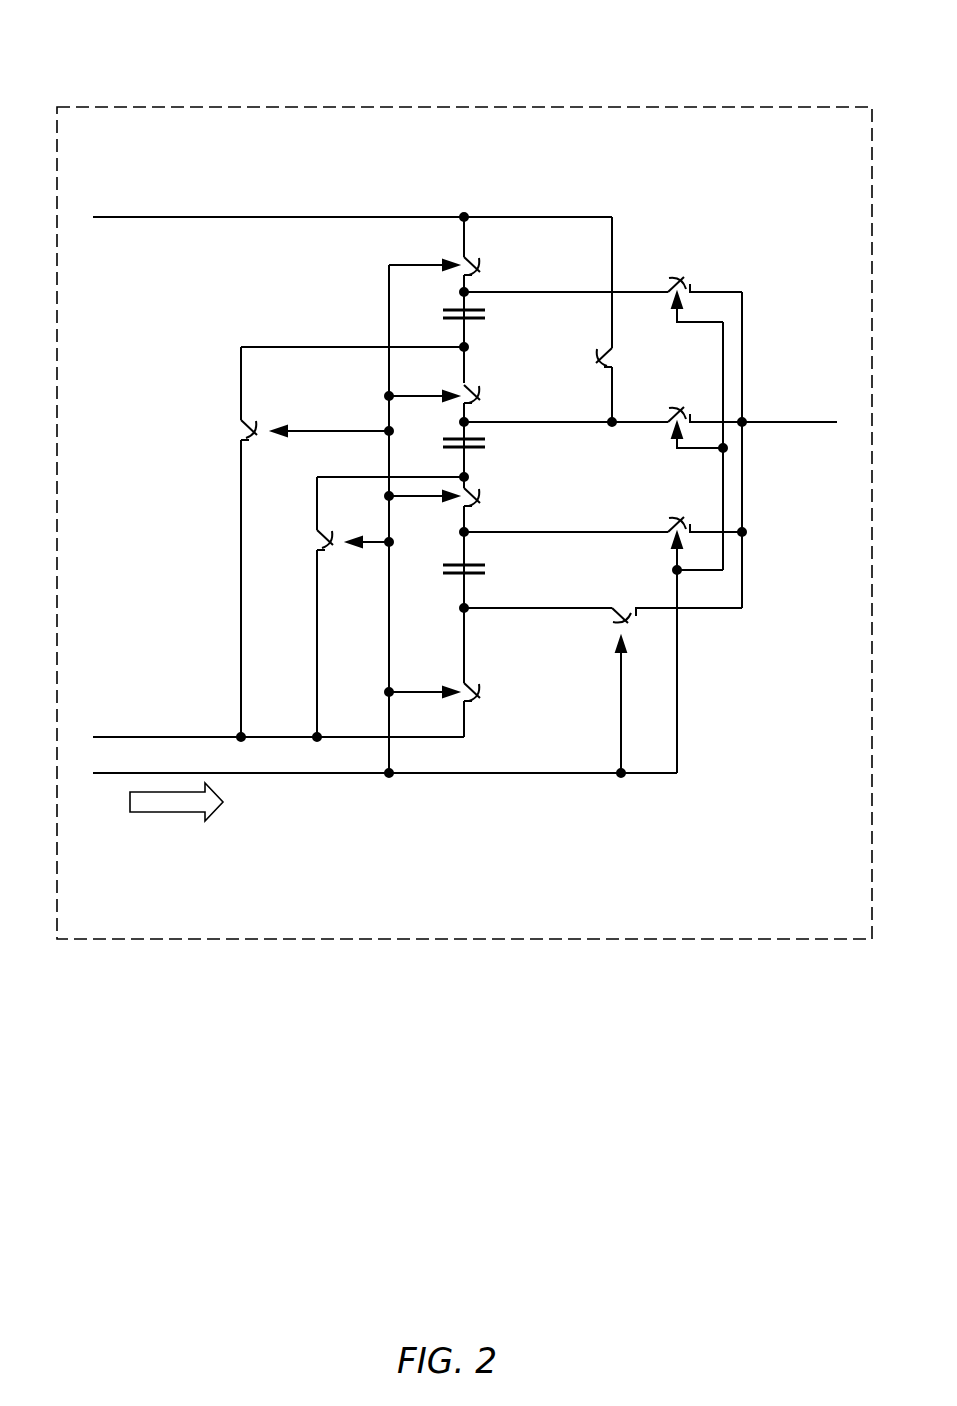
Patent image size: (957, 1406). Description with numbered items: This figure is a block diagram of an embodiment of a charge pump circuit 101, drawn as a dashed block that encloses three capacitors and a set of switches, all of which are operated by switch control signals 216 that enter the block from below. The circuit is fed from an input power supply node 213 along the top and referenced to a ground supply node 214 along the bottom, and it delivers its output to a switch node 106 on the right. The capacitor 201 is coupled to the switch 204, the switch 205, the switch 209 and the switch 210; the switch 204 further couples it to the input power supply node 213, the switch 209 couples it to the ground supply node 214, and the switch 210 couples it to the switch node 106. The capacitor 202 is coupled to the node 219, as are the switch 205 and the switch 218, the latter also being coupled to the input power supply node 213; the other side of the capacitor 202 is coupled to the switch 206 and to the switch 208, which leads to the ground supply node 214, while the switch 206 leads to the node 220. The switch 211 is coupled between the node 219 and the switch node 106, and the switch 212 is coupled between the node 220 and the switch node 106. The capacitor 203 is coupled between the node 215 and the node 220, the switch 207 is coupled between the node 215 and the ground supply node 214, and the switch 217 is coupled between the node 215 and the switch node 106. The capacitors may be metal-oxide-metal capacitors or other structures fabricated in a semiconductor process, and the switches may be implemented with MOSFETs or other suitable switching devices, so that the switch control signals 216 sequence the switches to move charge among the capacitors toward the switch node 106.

The charge pump circuit 101 is at (503, 107).
The switch node 106 is at (789, 410).
The capacitor 201 is at (488, 314).
The capacitor 202 is at (494, 444).
The capacitor 203 is at (492, 569).
The switch 204 is at (488, 265).
The switch 205 is at (494, 394).
The switch 206 is at (494, 496).
The switch 207 is at (492, 692).
The switch 208 is at (314, 543).
The switch 209 is at (238, 437).
The switch 210 is at (683, 272).
The switch 211 is at (683, 402).
The switch 212 is at (683, 512).
The input power supply node 213 is at (352, 196).
The ground supply node 214 is at (278, 725).
The node 215 is at (551, 610).
The switch control signals 216 is at (172, 812).
The switch 217 is at (625, 605).
The switch 218 is at (586, 358).
The node 219 is at (605, 425).
The node 220 is at (605, 530).